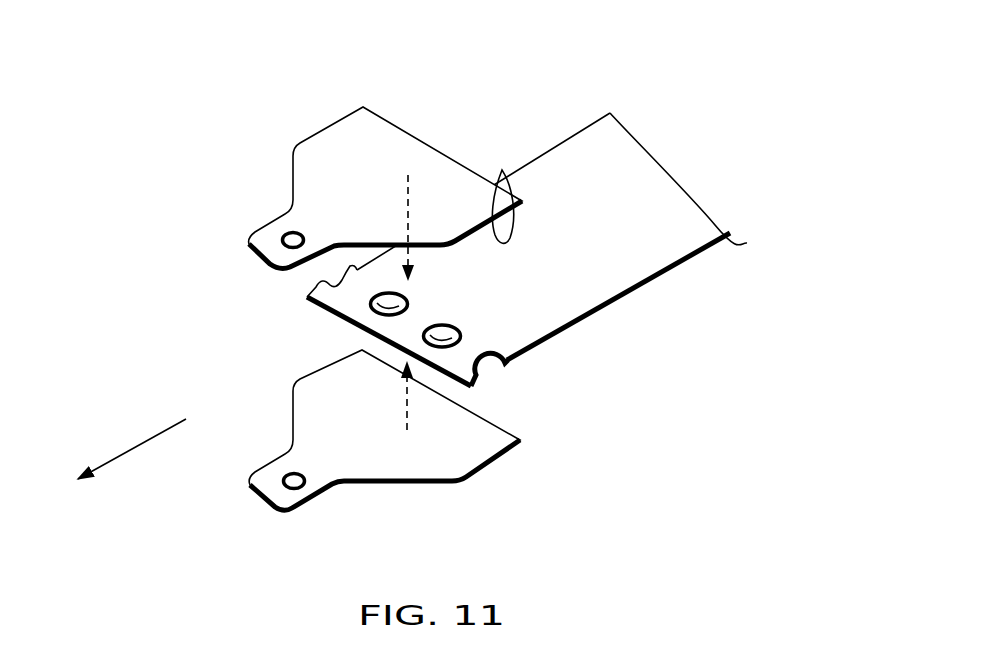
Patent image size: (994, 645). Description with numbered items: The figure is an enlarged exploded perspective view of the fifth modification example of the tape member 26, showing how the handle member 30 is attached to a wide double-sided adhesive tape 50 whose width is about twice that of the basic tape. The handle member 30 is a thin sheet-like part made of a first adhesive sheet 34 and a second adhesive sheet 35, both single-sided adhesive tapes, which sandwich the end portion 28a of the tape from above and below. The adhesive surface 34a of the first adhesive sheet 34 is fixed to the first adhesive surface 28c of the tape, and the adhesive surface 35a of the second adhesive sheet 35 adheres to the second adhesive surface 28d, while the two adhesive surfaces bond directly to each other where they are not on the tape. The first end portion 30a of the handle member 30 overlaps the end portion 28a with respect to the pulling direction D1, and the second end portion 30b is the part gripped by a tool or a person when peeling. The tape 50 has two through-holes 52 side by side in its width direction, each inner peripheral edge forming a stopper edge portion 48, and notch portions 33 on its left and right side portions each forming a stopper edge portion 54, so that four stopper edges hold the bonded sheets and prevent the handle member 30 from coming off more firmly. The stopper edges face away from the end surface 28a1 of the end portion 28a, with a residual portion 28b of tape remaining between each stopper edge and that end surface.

The tape member 26 is at (141, 37).
The handle member 30 is at (258, 212).
The first end portion 30a is at (385, 133).
The second end portion 30b is at (252, 246).
The notch portion 33 is at (343, 278).
The first adhesive sheet 34 is at (312, 161).
The adhesive surface 34a is at (503, 172).
The second adhesive sheet 35 is at (388, 489).
The adhesive surface 35a is at (437, 453).
The double-sided adhesive tape 50 is at (692, 264).
The through-holes 52 is at (408, 303).
The stopper edge portion 54 is at (312, 278).
The stopper edge portion 48 is at (363, 327).
The end portion 28a is at (497, 374).
The end surface 28a1 is at (333, 298).
The residual portion 28b is at (336, 311).
The first adhesive surface 28c is at (602, 160).
The second adhesive surface 28d is at (707, 247).
The pulling direction D1 is at (114, 462).